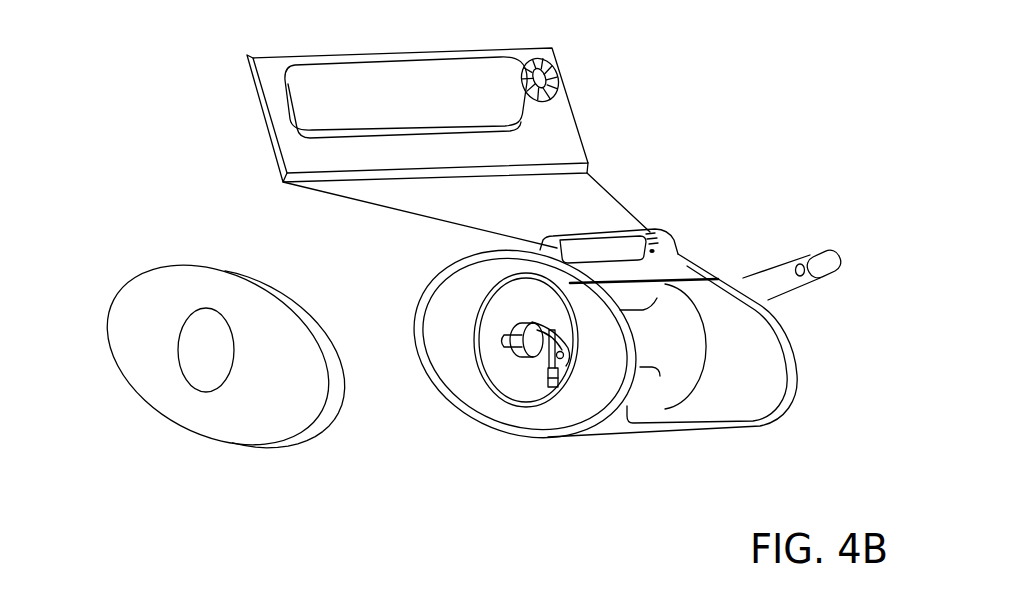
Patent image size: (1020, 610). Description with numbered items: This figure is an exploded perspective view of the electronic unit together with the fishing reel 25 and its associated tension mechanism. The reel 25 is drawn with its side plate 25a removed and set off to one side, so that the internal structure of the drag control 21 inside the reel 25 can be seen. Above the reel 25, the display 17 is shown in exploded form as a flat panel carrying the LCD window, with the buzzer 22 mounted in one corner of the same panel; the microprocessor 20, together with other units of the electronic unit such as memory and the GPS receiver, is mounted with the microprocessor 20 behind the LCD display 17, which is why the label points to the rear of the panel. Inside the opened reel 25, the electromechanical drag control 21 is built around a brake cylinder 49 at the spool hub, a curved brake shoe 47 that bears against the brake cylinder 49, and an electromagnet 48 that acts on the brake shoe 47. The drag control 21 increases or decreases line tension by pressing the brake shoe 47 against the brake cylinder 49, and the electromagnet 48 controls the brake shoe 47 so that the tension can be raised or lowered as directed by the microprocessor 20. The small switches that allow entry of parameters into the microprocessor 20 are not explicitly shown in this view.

The display 17 is at (290, 110).
The microprocessor 20 is at (343, 180).
The drag control 21 is at (512, 394).
The buzzer 22 is at (530, 62).
The fishing reel 25 is at (718, 236).
The side plate 25a is at (293, 313).
The brake shoe 47 is at (533, 300).
The electromagnet 48 is at (556, 387).
The brake cylinder 49 is at (525, 326).